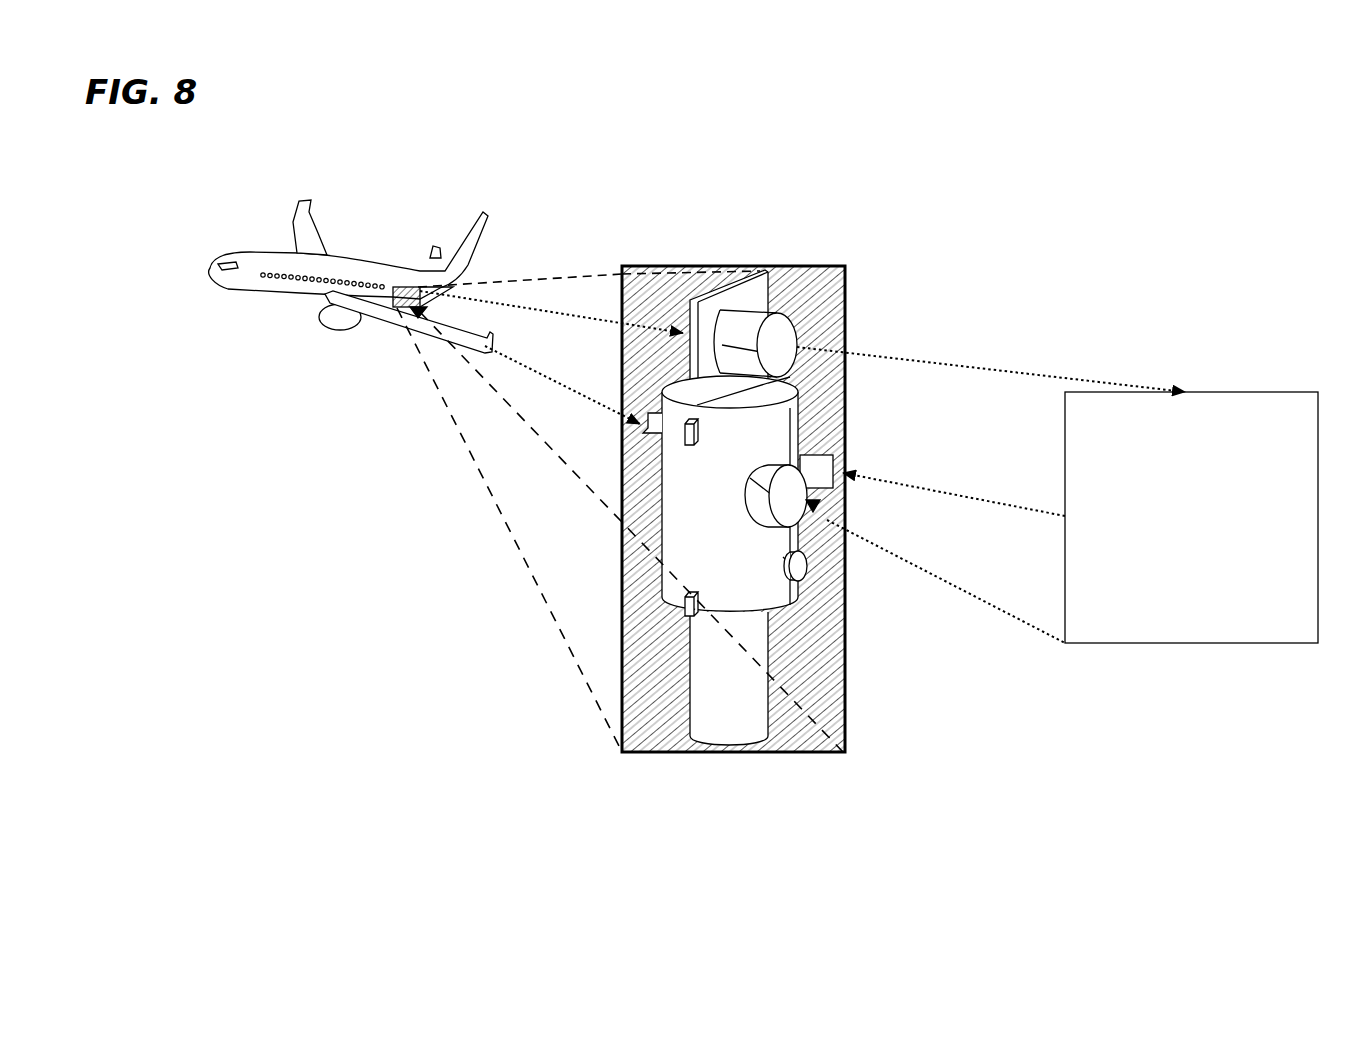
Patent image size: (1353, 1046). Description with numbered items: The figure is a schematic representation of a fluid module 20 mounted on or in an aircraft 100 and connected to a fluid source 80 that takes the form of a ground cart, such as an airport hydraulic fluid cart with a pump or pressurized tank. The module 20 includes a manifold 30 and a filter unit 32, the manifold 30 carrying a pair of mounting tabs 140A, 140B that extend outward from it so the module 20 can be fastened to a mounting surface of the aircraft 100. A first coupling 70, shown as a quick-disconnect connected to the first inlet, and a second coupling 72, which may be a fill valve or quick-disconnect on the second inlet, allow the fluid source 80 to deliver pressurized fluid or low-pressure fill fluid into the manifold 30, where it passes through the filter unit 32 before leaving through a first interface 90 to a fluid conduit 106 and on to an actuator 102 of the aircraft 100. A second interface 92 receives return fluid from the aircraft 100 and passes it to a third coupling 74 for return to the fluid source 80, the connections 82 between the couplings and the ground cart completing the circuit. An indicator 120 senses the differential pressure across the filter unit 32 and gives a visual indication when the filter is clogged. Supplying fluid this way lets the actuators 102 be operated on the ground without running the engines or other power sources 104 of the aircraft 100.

The fluid module 20 is at (713, 485).
The manifold 30 is at (657, 621).
The filter unit 32 is at (732, 753).
The first coupling 70 is at (764, 529).
The second coupling 72 is at (818, 443).
The third coupling 74 is at (776, 300).
The fluid source 80 is at (1218, 390).
The communication links to ground cart 82 is at (988, 590).
The first interface 90 is at (637, 433).
The second interface 92 is at (682, 314).
The aircraft 100 is at (351, 279).
The actuator 102 is at (398, 282).
The engines or other power sources 104 is at (333, 332).
The fluid conduit 106 is at (552, 372).
The indicator 120 is at (814, 570).
The mounting tab 140A is at (681, 446).
The mounting tab 140B is at (688, 619).